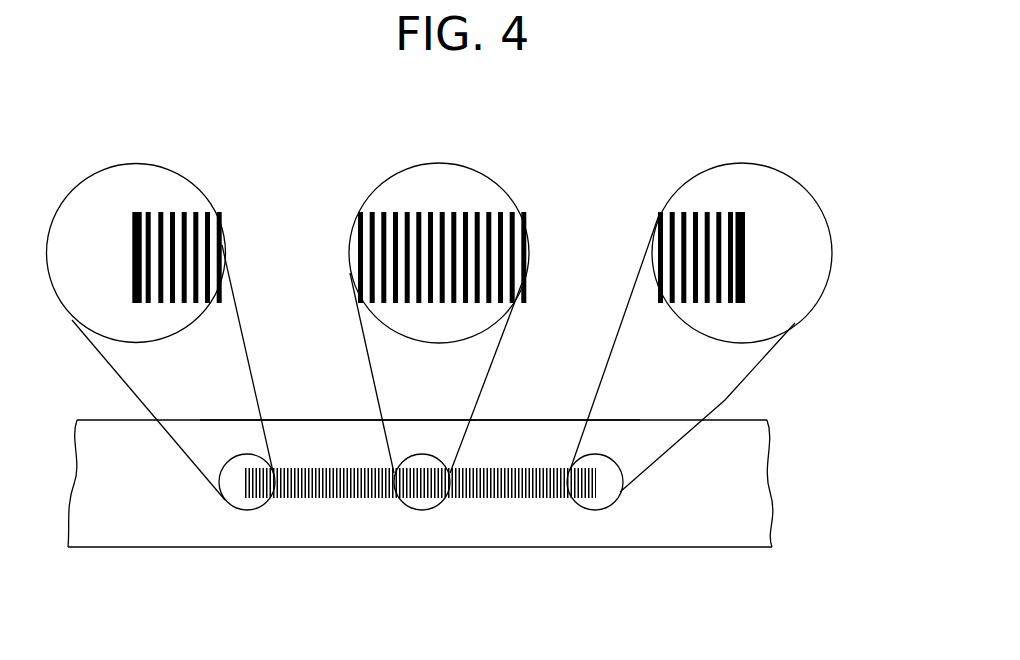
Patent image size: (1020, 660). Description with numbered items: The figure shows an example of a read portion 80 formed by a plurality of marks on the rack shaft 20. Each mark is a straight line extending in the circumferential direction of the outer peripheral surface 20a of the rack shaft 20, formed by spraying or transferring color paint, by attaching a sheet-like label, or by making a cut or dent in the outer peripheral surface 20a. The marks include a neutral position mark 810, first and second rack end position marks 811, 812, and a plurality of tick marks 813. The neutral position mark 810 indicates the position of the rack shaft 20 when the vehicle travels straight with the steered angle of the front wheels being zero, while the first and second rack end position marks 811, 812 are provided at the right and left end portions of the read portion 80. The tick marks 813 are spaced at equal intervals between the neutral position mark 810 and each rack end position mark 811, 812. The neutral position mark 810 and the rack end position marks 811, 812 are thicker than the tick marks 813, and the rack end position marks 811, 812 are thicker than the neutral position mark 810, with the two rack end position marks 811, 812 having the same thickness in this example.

The rack shaft 20 is at (630, 547).
The outer peripheral surface 20a is at (472, 528).
The read portion 80 is at (305, 512).
The neutral position mark 810 is at (441, 213).
The first rack end position mark 811 is at (135, 213).
The second rack end position mark 812 is at (739, 213).
The tick marks 813 is at (486, 214).